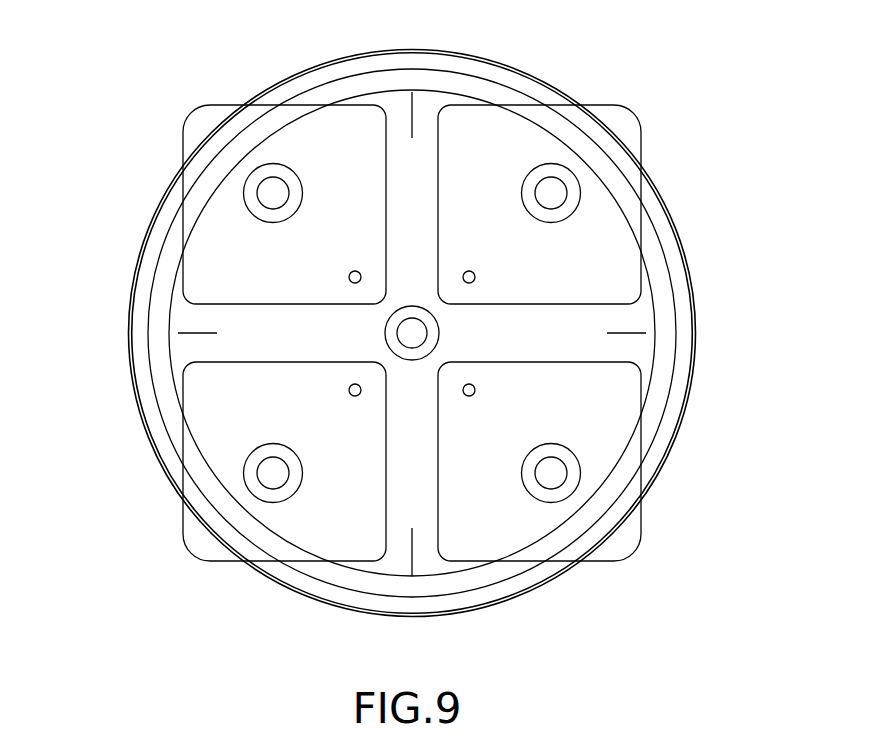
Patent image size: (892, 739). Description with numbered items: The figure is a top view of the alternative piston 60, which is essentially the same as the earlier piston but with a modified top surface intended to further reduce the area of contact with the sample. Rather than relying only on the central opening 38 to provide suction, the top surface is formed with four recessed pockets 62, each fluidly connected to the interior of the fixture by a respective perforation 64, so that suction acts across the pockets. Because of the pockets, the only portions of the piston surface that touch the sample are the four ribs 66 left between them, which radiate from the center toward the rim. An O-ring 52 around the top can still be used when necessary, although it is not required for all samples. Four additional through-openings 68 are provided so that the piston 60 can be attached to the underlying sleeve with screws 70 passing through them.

The opening 38 is at (416, 333).
The O-ring 52 is at (650, 238).
The alternative piston 60 is at (654, 93).
The recessed pockets 62 is at (341, 150).
The perforations 64 is at (348, 277).
The ribs 66 is at (412, 95).
The through-openings 68 is at (244, 207).
The screws 70 is at (273, 193).